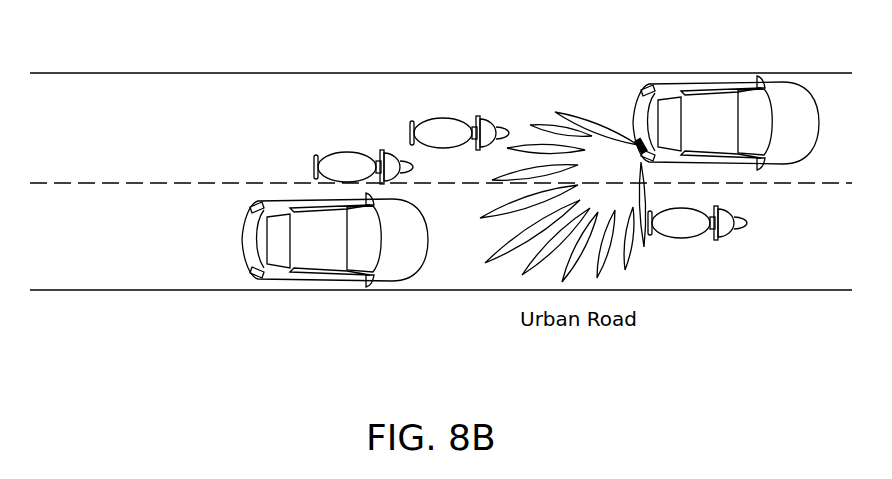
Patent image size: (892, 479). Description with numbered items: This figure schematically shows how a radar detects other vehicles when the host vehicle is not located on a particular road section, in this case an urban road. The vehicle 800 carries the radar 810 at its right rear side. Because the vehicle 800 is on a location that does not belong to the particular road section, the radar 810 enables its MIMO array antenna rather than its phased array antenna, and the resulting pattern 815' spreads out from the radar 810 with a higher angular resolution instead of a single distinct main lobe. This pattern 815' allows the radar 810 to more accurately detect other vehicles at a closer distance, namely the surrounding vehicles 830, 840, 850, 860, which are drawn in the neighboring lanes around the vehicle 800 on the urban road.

The vehicle 800 is at (782, 100).
The radar 810 is at (636, 141).
The pattern 815' is at (563, 157).
The vehicle 830 is at (441, 132).
The vehicle 840 is at (345, 160).
The vehicle 850 is at (278, 213).
The vehicle 860 is at (685, 233).